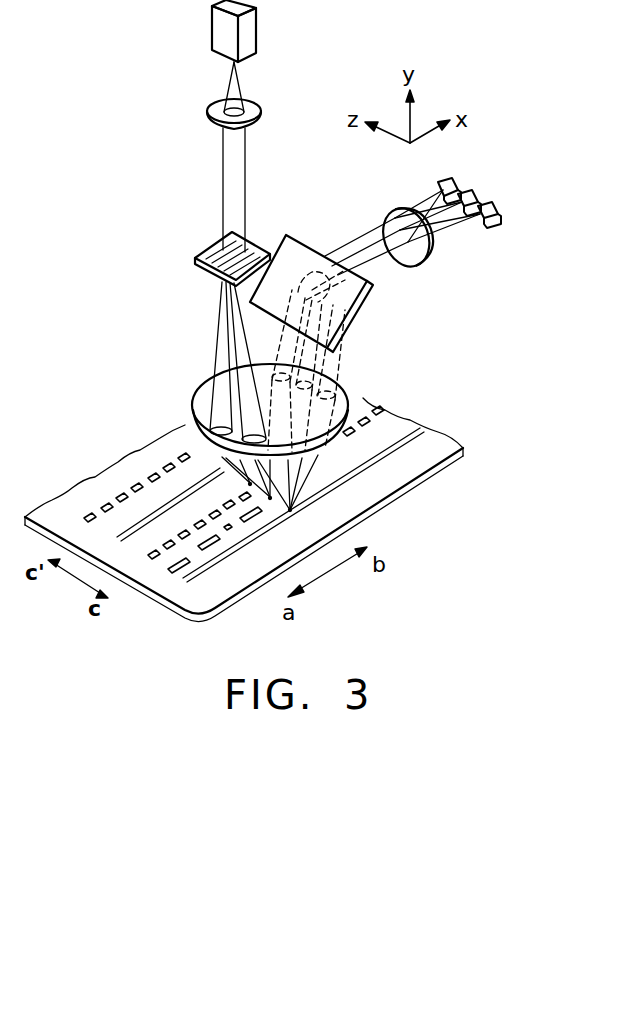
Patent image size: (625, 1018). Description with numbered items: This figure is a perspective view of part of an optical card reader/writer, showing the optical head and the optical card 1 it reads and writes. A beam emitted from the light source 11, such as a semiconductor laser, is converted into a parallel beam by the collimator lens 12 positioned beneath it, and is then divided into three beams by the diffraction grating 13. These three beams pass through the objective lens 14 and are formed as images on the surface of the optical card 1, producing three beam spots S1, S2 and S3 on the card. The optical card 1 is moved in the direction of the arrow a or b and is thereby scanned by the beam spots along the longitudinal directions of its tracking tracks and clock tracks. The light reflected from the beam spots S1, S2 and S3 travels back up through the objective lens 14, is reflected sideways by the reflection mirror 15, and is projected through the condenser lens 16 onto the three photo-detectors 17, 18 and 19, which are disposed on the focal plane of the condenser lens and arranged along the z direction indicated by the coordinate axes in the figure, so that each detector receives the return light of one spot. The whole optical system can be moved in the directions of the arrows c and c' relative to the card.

The optical card 1 is at (400, 483).
The semiconductor laser 11 is at (253, 29).
The collimator lens 12 is at (261, 107).
The diffraction grating 13 is at (205, 252).
The objective lens 14 is at (192, 400).
The reflection mirror 15 is at (358, 305).
The condenser lens 16 is at (432, 262).
The photo-detector 17 is at (500, 210).
The photo-detector 18 is at (478, 196).
The photo-detector 19 is at (452, 177).
The beam spot S1 is at (250, 485).
The beam spot S2 is at (270, 498).
The beam spot S3 is at (290, 510).